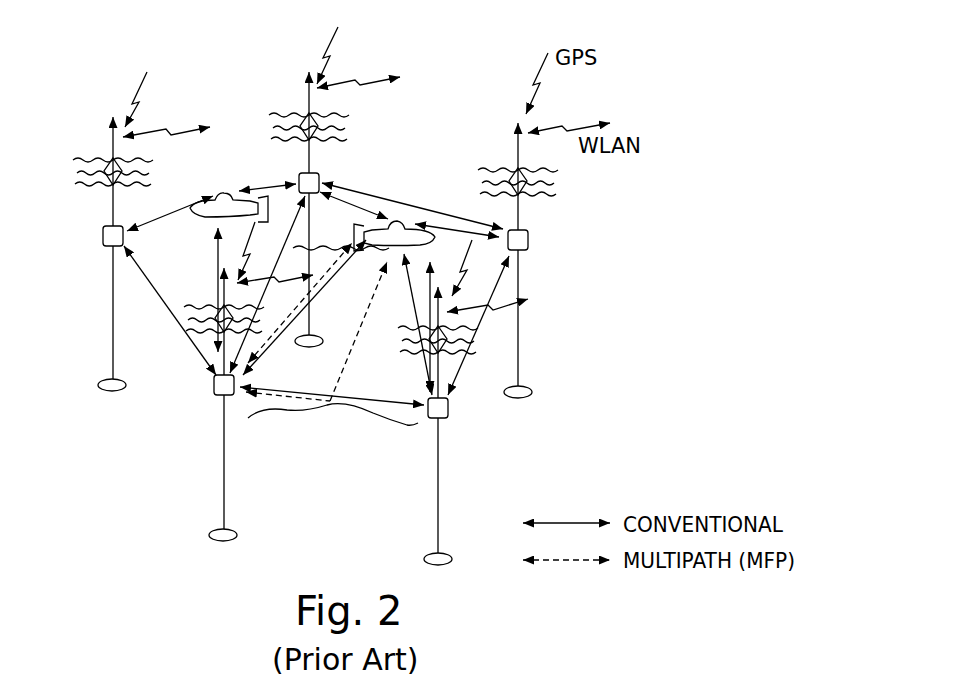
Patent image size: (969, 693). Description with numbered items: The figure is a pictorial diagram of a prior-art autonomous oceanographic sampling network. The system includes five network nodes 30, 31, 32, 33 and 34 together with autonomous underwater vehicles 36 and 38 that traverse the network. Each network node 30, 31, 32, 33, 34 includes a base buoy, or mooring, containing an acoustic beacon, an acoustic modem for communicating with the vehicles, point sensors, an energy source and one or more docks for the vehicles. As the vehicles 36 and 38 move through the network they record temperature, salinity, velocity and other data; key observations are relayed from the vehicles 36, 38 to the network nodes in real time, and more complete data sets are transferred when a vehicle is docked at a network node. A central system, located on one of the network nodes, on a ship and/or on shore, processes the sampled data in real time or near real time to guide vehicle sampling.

The network node 30 is at (102, 249).
The network node 31 is at (334, 165).
The network node 32 is at (531, 268).
The network node 33 is at (208, 418).
The network node 34 is at (456, 432).
The autonomous underwater vehicle 36 is at (203, 221).
The autonomous underwater vehicle 38 is at (407, 223).